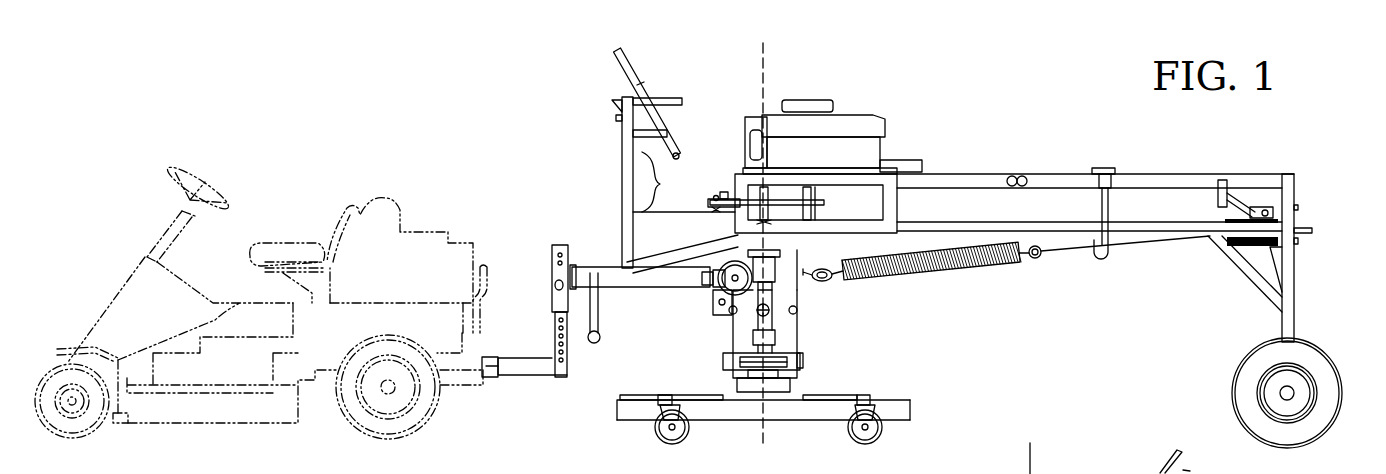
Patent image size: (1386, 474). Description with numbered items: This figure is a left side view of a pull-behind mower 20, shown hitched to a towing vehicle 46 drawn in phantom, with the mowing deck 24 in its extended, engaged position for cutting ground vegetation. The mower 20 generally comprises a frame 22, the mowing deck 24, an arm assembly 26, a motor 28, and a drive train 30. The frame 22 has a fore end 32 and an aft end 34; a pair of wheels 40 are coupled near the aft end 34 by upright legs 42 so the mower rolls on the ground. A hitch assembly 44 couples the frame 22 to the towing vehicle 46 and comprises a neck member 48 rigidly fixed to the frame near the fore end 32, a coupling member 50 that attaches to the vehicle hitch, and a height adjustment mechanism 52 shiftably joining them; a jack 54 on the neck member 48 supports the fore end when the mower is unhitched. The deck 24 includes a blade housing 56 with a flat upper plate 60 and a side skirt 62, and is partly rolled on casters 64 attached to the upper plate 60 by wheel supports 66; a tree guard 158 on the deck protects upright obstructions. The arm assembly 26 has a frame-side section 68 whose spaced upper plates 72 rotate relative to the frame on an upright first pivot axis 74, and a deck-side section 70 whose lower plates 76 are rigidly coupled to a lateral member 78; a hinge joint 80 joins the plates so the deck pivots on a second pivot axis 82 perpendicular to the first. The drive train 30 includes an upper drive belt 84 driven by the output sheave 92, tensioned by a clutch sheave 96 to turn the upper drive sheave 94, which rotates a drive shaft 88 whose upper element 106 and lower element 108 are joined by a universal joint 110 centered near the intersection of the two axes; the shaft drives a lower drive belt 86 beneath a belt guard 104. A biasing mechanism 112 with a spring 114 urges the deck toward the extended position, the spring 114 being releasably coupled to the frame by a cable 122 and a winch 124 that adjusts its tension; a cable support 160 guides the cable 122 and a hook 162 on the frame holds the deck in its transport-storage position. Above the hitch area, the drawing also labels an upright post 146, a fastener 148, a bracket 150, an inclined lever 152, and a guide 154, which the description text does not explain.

The pull-behind mower 20 is at (945, 112).
The frame 22 is at (1046, 164).
The mowing deck 24 is at (903, 390).
The arm assembly 26 is at (722, 323).
The motor 28 is at (817, 98).
The drive train 30 is at (735, 338).
The fore end 32 is at (728, 192).
The aft end 34 is at (1297, 200).
The wheels 40 is at (1240, 361).
The upright legs 42 is at (1296, 312).
The hitch assembly 44 is at (583, 257).
The towing vehicle 46 is at (296, 222).
The neck member 48 is at (687, 248).
The coupling member 50 is at (533, 358).
The height adjustment mechanism 52 is at (548, 268).
The jack 54 is at (648, 282).
The blade housing 56 is at (925, 403).
The upper plate 60 is at (930, 398).
The side skirt 62 is at (912, 418).
The casters 64 is at (682, 440).
The wheel supports 66 is at (707, 400).
The frame-side section 68 is at (820, 300).
The deck-side section 70 is at (820, 325).
The upper plates 72 is at (925, 272).
The first pivot axis 74 is at (713, 310).
The lower plates 76 is at (800, 360).
The lateral member 78 is at (748, 372).
The hinge joint 80 is at (800, 310).
The second pivot axis 82 is at (762, 60).
The upper drive belt 84 is at (792, 191).
The lower drive belt 86 is at (725, 354).
The drive shaft 88 is at (792, 262).
The output sheave 92 is at (800, 366).
The upper drive sheave 94 is at (870, 198).
The clutch sheave 96 is at (717, 196).
The belt guard 104 is at (798, 365).
The upper element 106 is at (836, 283).
The lower element 108 is at (803, 352).
The universal joint 110 is at (797, 338).
The biasing mechanism 112 is at (1031, 287).
The spring 114 is at (989, 268).
The cable 122 is at (1131, 248).
The winch 124 is at (1258, 208).
The vertical post 146 is at (605, 160).
The bolt 148 is at (618, 118).
The bracket 150 is at (612, 100).
The lever 152 is at (622, 66).
The cable guide 154 is at (684, 155).
The tree guard 158 is at (625, 398).
The cable support 160 is at (1006, 176).
The hook 162 is at (1110, 210).